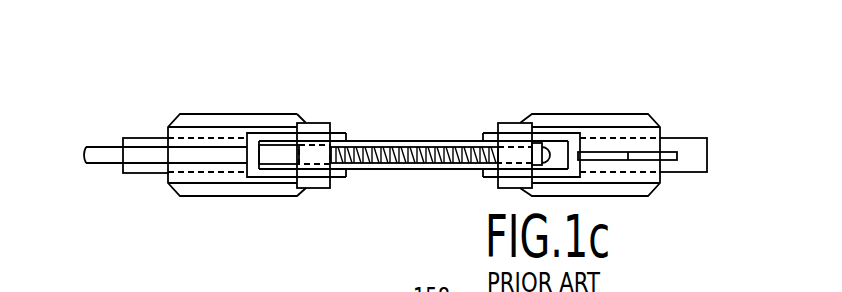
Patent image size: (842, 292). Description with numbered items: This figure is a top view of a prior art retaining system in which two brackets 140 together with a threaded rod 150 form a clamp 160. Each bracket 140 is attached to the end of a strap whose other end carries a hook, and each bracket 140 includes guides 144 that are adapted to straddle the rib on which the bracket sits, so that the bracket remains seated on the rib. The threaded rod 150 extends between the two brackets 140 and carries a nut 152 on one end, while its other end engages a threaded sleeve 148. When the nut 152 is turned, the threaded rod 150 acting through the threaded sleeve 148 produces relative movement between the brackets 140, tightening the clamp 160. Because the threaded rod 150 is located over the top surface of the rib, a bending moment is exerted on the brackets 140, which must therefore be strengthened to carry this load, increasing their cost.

The clamp 160 is at (220, 56).
The guides 144 is at (182, 123).
The bracket 140 is at (265, 115).
The threaded sleeve 148 is at (325, 190).
The threaded rod 150 is at (414, 150).
The nut 152 is at (538, 150).